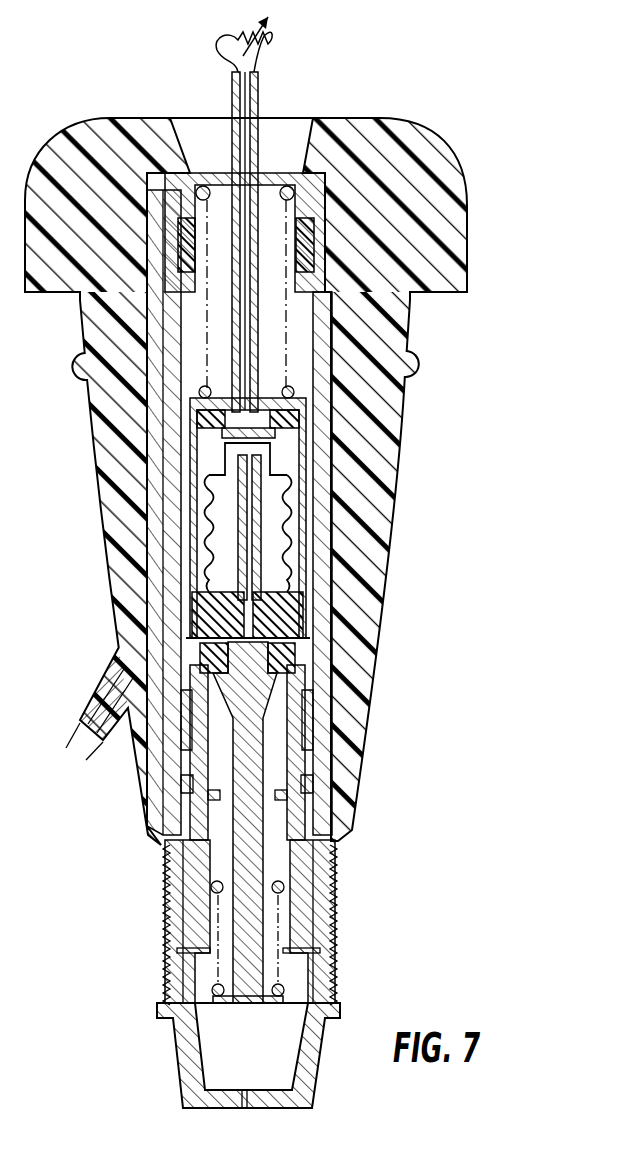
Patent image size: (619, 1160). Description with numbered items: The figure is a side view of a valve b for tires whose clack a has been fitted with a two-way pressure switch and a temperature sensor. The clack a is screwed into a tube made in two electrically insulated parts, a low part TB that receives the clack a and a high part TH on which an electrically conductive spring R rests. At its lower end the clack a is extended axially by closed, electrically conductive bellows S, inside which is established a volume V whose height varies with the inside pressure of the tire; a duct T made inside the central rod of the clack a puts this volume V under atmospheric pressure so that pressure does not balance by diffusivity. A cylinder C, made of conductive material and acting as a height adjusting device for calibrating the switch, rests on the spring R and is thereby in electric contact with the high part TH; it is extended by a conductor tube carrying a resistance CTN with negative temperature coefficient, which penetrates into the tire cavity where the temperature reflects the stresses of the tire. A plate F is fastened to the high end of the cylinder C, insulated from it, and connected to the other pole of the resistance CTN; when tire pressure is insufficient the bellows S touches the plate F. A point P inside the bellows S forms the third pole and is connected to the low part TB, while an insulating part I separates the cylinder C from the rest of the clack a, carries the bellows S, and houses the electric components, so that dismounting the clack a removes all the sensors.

The resistance with negative temperature coefficient CTN is at (272, 31).
The high part of the tube TH is at (323, 188).
The spring R is at (300, 345).
The plate F is at (305, 432).
The volume V is at (270, 508).
The cylinder C is at (300, 560).
The bellows S is at (242, 585).
The point P is at (250, 578).
The insulating part I is at (300, 630).
The low part of the tube TB is at (320, 693).
The duct T is at (228, 720).
The valve b is at (385, 778).
The clack a is at (262, 832).